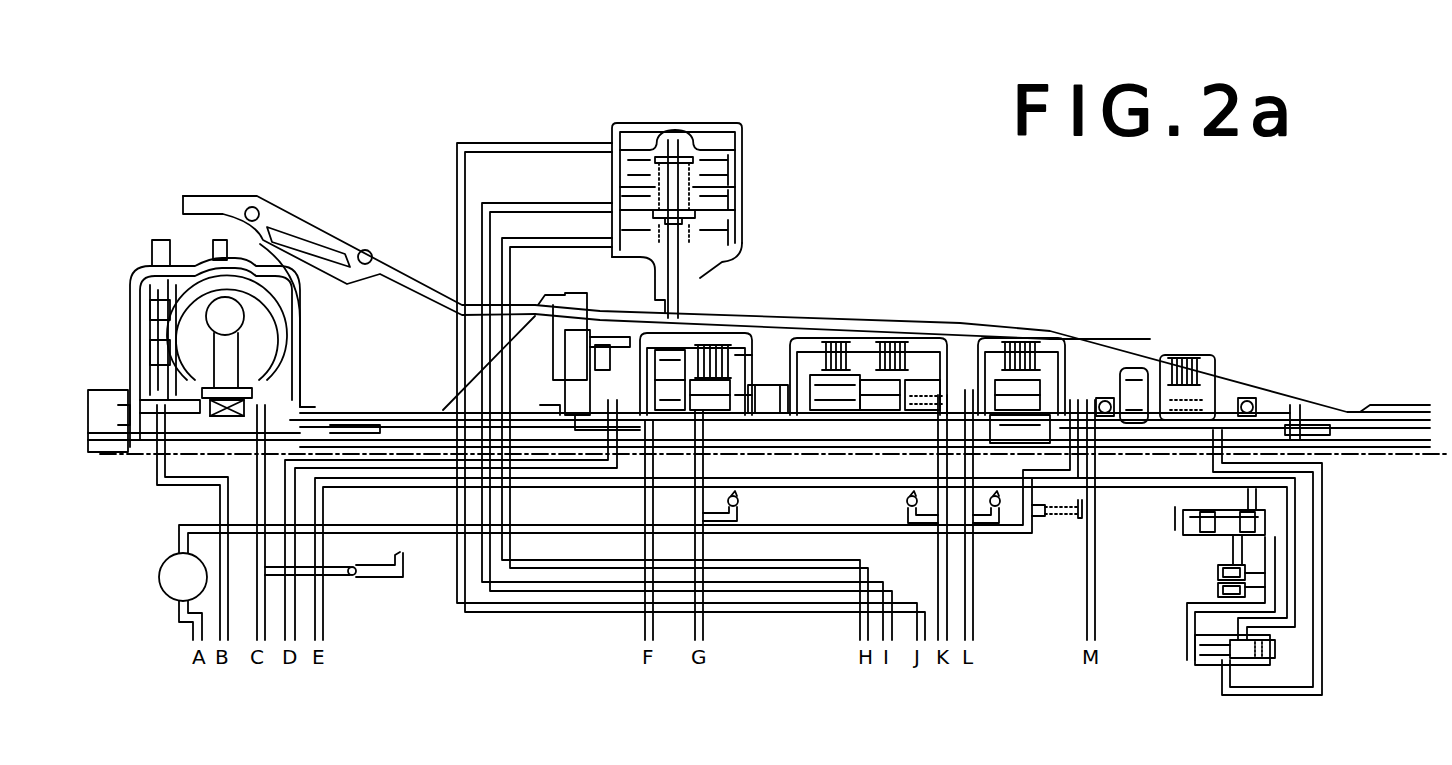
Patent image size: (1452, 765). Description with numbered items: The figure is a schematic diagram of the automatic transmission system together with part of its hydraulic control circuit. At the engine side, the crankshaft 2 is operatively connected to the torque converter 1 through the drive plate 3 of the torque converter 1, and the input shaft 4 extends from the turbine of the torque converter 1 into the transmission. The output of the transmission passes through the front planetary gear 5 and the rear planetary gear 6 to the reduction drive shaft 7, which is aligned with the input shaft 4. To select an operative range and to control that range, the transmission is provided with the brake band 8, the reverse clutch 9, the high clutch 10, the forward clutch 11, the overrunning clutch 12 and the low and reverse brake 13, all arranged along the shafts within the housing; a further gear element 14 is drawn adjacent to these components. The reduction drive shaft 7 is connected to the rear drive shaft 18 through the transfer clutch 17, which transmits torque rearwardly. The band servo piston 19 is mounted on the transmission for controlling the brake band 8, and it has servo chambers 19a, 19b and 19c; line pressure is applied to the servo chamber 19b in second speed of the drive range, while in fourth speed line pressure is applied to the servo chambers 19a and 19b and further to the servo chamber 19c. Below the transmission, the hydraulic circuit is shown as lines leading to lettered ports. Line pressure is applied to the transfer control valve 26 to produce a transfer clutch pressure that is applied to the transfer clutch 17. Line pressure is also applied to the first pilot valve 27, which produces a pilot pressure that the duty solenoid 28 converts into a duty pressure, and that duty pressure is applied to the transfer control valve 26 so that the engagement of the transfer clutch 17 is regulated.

The torque converter 1 is at (264, 352).
The crankshaft 2 is at (116, 406).
The drive plate 3 is at (126, 273).
The input shaft 4 is at (388, 440).
The front planetary gear 5 is at (768, 405).
The rear planetary gear 6 is at (835, 405).
The reduction drive shaft 7 is at (1010, 425).
The brake band 8 is at (695, 335).
The reverse clutch 9 is at (660, 340).
The high clutch 10 is at (735, 345).
The forward clutch 11 is at (836, 340).
The overrunning clutch 12 is at (893, 338).
The low and reverse brake 13 is at (1010, 345).
The one-way clutch 14 is at (1130, 368).
The transfer clutch 17 is at (1190, 362).
The rear drive shaft 18 is at (1310, 430).
The band servo piston 19 is at (681, 122).
The servo chamber 19a is at (718, 232).
The servo chamber 19b is at (722, 206).
The servo chamber 19c is at (710, 173).
The transfer control valve 26 is at (1272, 648).
The first pilot valve 27 is at (1183, 527).
The duty solenoid 28 is at (1218, 582).